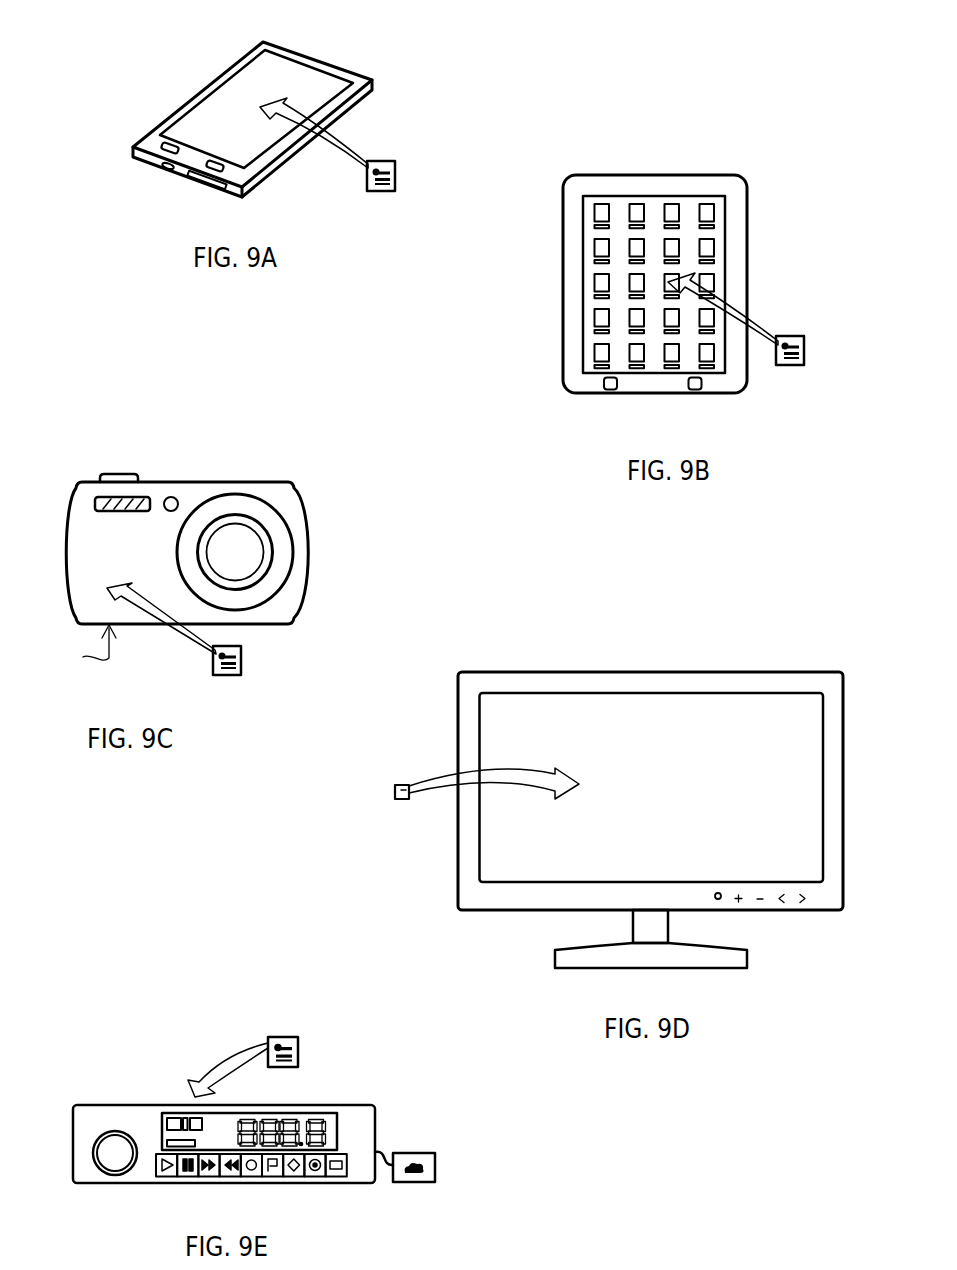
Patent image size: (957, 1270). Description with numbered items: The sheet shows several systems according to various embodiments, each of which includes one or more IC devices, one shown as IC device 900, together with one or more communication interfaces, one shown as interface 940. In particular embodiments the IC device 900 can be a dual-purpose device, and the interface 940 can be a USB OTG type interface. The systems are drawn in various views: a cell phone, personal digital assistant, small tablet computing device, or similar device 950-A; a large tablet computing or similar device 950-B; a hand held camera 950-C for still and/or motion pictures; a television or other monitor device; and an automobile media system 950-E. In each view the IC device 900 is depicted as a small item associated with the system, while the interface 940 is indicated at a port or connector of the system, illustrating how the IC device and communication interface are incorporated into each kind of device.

In FIG. 9A, the IC device 900 is at (367, 187).
In FIG. 9B, the IC device 900 is at (790, 367).
In FIG. 9C, the IC device 900 is at (228, 677).
In FIG. 9D, the IC device 900 is at (403, 785).
In FIG. 9E, the IC device 900 is at (300, 1045).
In FIG. 9A, the communication interface 940 is at (158, 170).
In FIG. 9B, the communication interface 940 is at (607, 397).
In FIG. 9D, the communication interface 940 is at (453, 898).
In FIG. 9E, the communication interface 940 is at (435, 1173).
In FIG. 9A, the cell phone, personal digital assistant, small tablet computing device, or simila 950-A is at (177, 67).
In FIG. 9B, the large tablet computing device 950-B is at (607, 146).
In FIG. 9C, the hand held camera 950-C is at (140, 458).
In FIG. 9D, the hand held camera 950-C is at (487, 666).
In FIG. 9E, the automobile media system 950-E is at (124, 1095).